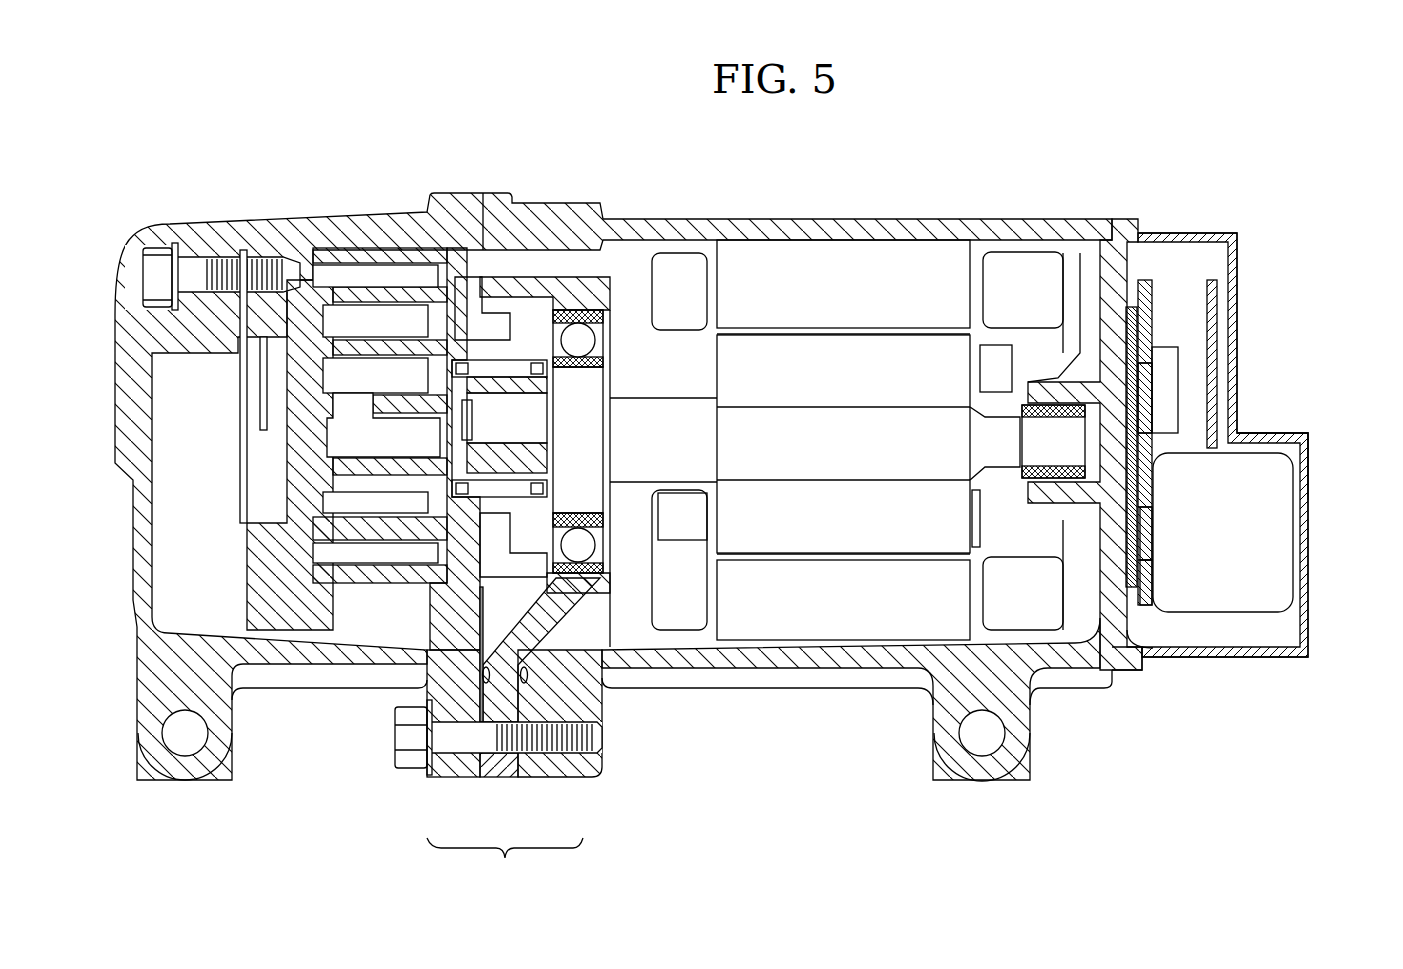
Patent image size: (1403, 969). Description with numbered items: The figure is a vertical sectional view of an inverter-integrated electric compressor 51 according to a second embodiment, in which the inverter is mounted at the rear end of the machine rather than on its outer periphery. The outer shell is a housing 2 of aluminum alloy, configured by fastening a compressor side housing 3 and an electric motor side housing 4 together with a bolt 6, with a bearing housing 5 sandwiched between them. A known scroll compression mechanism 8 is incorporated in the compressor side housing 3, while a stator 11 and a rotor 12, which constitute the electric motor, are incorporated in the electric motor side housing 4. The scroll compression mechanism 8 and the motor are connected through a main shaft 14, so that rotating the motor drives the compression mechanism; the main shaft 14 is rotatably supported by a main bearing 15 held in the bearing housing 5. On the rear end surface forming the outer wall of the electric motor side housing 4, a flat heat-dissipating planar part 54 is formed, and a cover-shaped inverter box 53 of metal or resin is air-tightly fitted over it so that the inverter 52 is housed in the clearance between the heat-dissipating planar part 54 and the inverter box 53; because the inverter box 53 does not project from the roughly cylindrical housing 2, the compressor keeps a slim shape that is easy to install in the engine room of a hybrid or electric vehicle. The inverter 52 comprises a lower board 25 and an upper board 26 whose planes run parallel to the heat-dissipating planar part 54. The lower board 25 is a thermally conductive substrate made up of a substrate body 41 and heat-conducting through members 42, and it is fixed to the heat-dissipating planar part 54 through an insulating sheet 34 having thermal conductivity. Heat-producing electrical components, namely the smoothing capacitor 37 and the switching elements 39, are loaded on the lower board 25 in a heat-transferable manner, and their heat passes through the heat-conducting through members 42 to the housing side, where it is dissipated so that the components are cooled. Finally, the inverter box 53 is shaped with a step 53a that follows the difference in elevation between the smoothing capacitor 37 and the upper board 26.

The housing 2 is at (505, 867).
The compressor side housing 3 is at (447, 778).
The electric motor side housing 4 is at (565, 778).
The bearing housing 5 is at (503, 778).
The bolt 6 is at (405, 740).
The scroll compression mechanism 8 is at (370, 231).
The stator 11 is at (803, 318).
The rotor 12 is at (950, 520).
The main shaft 14 is at (848, 462).
The main bearing 15 is at (583, 339).
The lower board 25 is at (1143, 282).
The upper board 26 is at (1217, 297).
The insulating sheet 34 is at (1135, 490).
The smoothing capacitor 37 is at (1272, 540).
The switching elements 39 is at (1180, 362).
The substrate body 41 is at (1155, 580).
The heat-conducting through member 42 is at (1148, 393).
The inverter-integrated electric compressor 51 is at (284, 112).
The inverter 52 is at (1186, 252).
The inverter box 53 is at (1237, 257).
The step 53a is at (1308, 440).
The heat-dissipating planar part 54 is at (1130, 627).